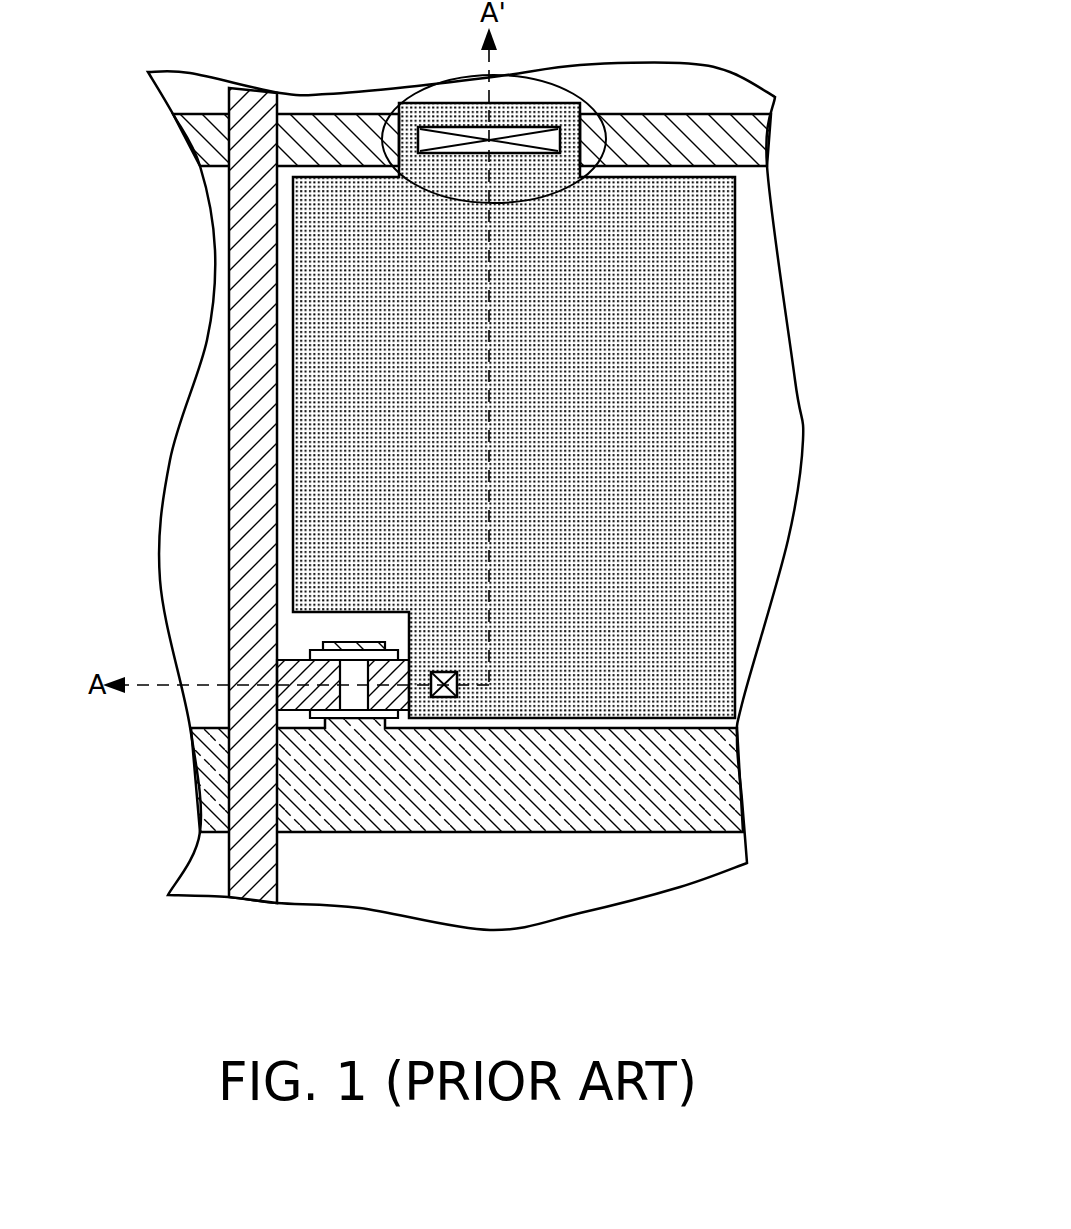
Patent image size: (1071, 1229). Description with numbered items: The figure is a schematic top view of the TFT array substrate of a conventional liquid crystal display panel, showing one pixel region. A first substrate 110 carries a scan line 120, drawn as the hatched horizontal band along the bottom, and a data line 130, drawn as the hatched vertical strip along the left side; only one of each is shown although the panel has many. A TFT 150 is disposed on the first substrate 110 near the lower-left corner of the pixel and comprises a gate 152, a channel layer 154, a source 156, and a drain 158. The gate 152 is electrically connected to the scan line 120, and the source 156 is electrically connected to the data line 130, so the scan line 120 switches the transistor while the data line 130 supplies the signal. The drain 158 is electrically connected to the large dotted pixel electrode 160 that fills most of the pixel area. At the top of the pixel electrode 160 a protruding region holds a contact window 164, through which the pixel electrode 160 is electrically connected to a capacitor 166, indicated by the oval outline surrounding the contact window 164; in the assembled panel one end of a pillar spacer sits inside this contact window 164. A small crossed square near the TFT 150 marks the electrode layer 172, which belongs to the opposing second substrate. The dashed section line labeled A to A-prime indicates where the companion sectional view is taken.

The first substrate 110 is at (666, 862).
The scan line 120 is at (718, 783).
The data line 130 is at (250, 373).
The TFT 150 is at (210, 610).
The gate 152 is at (350, 645).
The channel layer 154 is at (327, 653).
The source 156 is at (295, 677).
The drain 158 is at (372, 698).
The pixel electrode 160 is at (715, 472).
The contact window 164 is at (531, 148).
The capacitor 166 is at (598, 107).
The electrode layer 172 is at (444, 697).